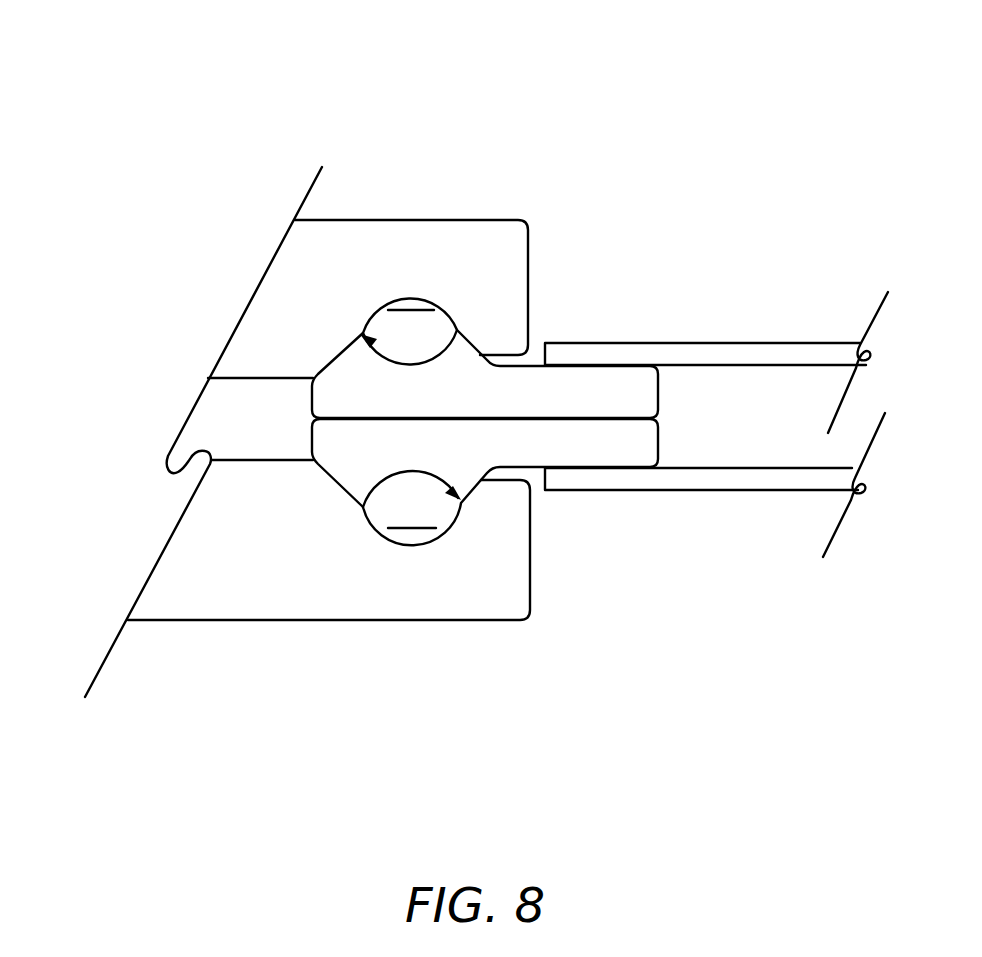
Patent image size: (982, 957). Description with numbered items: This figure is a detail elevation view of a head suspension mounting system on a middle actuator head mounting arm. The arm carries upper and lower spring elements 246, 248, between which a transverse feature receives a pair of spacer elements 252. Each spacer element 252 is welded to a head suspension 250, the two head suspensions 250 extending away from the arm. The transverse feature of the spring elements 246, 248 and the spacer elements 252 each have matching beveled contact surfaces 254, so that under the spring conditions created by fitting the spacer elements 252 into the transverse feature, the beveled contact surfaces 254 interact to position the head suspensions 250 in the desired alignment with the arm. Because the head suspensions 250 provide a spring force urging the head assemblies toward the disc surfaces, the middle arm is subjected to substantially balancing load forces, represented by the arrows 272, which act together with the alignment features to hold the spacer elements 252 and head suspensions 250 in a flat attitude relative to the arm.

The upper spring element 246 is at (298, 280).
The lower spring element 248 is at (275, 547).
The head suspension 250 is at (770, 358).
The spacer element 252 is at (587, 383).
The beveled contact surface 254 is at (458, 330).
The arrow representing load force 272 is at (682, 343).